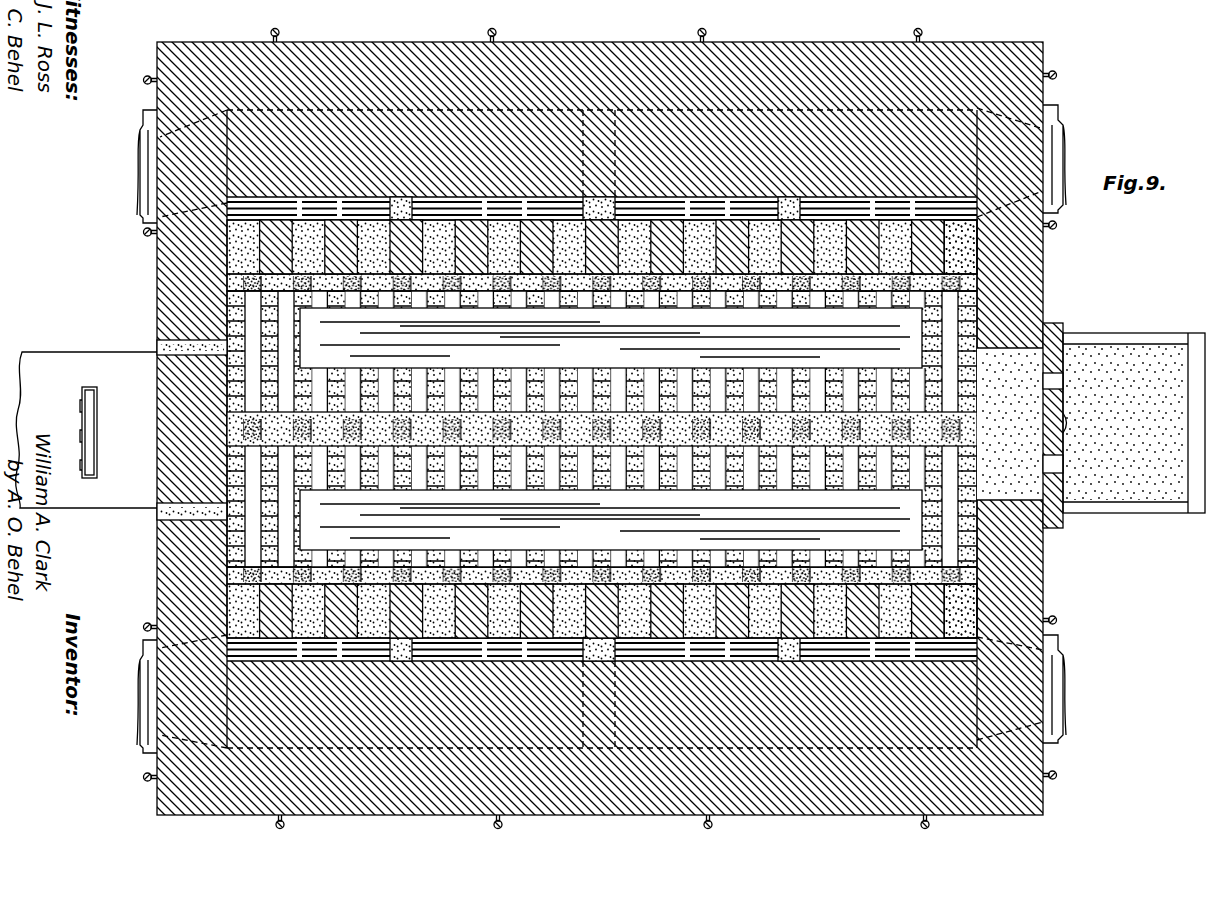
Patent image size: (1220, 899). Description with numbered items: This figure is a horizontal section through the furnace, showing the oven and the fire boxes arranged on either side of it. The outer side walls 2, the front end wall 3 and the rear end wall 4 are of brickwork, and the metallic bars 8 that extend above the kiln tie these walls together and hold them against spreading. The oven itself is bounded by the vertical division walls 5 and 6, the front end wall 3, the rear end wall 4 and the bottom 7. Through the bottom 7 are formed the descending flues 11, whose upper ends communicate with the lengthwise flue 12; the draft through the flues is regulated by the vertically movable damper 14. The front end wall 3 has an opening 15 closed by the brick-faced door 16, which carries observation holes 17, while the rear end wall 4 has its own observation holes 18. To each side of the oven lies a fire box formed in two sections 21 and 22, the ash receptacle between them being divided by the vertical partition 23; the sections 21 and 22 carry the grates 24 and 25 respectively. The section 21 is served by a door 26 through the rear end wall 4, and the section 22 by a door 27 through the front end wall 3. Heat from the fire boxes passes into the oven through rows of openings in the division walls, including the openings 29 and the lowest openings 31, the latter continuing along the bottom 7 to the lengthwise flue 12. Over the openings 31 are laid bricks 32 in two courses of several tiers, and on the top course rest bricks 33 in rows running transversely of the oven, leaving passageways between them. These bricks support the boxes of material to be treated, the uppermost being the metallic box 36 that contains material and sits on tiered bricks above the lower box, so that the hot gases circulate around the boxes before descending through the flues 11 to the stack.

The outer side walls 2 is at (607, 45).
The front end wall 3 is at (1043, 268).
The rear end wall 4 is at (232, 292).
The vertical division wall 5 is at (258, 250).
The vertical division wall 6 is at (270, 602).
The bottom 7 is at (230, 298).
The metallic bars 8 is at (280, 34).
The descending flues 11 is at (232, 428).
The lengthwise flue 12 is at (232, 418).
The damper 14 is at (84, 400).
The opening 15 is at (1015, 485).
The door 16 is at (1064, 331).
The observation holes 17 is at (1062, 383).
The observation holes 18 is at (158, 344).
The fire box section 21 is at (397, 198).
The fire box section 22 is at (792, 198).
The vertical partition 23 is at (603, 198).
The grate 24 is at (307, 198).
The grate 25 is at (871, 198).
The door 26 is at (146, 165).
The door 27 is at (1063, 165).
The openings 29 is at (963, 243).
The openings 31 is at (940, 278).
The bricks 32 is at (232, 284).
The bricks 33 is at (1043, 296).
The metallic box 36 is at (611, 429).